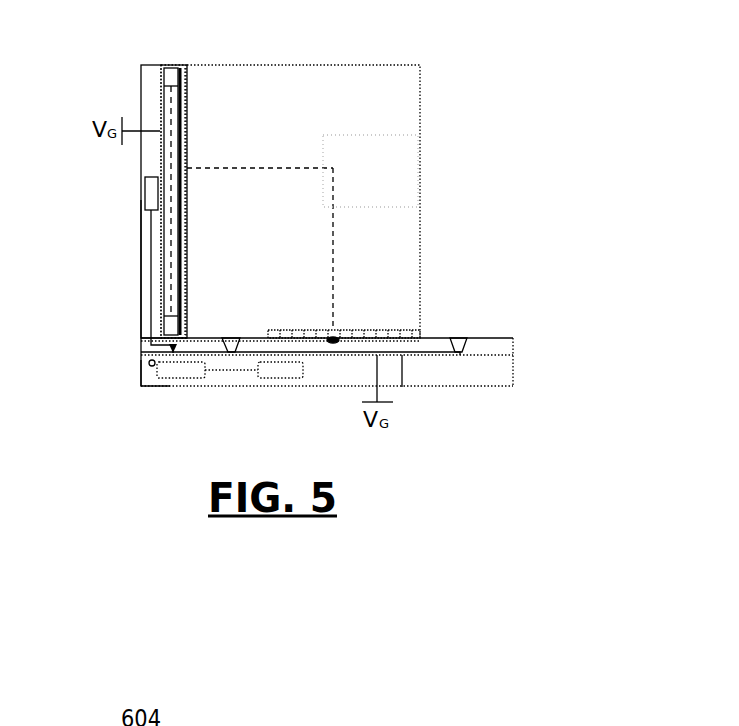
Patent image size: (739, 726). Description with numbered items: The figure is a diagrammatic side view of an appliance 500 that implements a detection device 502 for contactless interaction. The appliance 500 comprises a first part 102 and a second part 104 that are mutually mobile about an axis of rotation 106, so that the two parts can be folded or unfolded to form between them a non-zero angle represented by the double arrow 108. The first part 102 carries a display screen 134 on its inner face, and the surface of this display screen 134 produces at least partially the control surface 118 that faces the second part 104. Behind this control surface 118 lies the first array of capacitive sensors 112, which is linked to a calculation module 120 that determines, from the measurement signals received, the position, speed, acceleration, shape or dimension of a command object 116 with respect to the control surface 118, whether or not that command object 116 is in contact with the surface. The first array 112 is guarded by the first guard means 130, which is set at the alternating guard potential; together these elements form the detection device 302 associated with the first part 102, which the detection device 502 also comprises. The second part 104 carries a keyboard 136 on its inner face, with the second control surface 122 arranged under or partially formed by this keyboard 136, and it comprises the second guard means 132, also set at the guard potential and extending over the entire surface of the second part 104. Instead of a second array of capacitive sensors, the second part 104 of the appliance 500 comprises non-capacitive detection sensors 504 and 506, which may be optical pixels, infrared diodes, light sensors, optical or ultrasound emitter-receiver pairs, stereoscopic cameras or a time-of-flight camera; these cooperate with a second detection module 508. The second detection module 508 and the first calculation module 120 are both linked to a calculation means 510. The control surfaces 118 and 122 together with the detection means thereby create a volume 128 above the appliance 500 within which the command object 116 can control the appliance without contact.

The appliance 500 is at (554, 119).
The first part 102 is at (134, 59).
The second part 104 is at (522, 334).
The axis of rotation 106 is at (149, 363).
The double arrow 108 is at (198, 307).
The first array of capacitive sensors 112 is at (160, 165).
The command object 116 is at (337, 148).
The control surface 118 is at (186, 96).
The calculation module 120 is at (145, 195).
The second control surface 122 is at (433, 338).
The volume 128 is at (420, 104).
The first guard means 130 is at (160, 100).
The second guard means 132 is at (402, 387).
The display screen 134 is at (185, 108).
The keyboard 136 is at (353, 331).
The detection device 302 is at (136, 266).
The detection device 502 is at (134, 382).
The non-capacitive detection sensor 504 is at (234, 337).
The non-capacitive detection sensor 506 is at (457, 338).
The second detection module 508 is at (290, 379).
The calculation means 510 is at (180, 387).